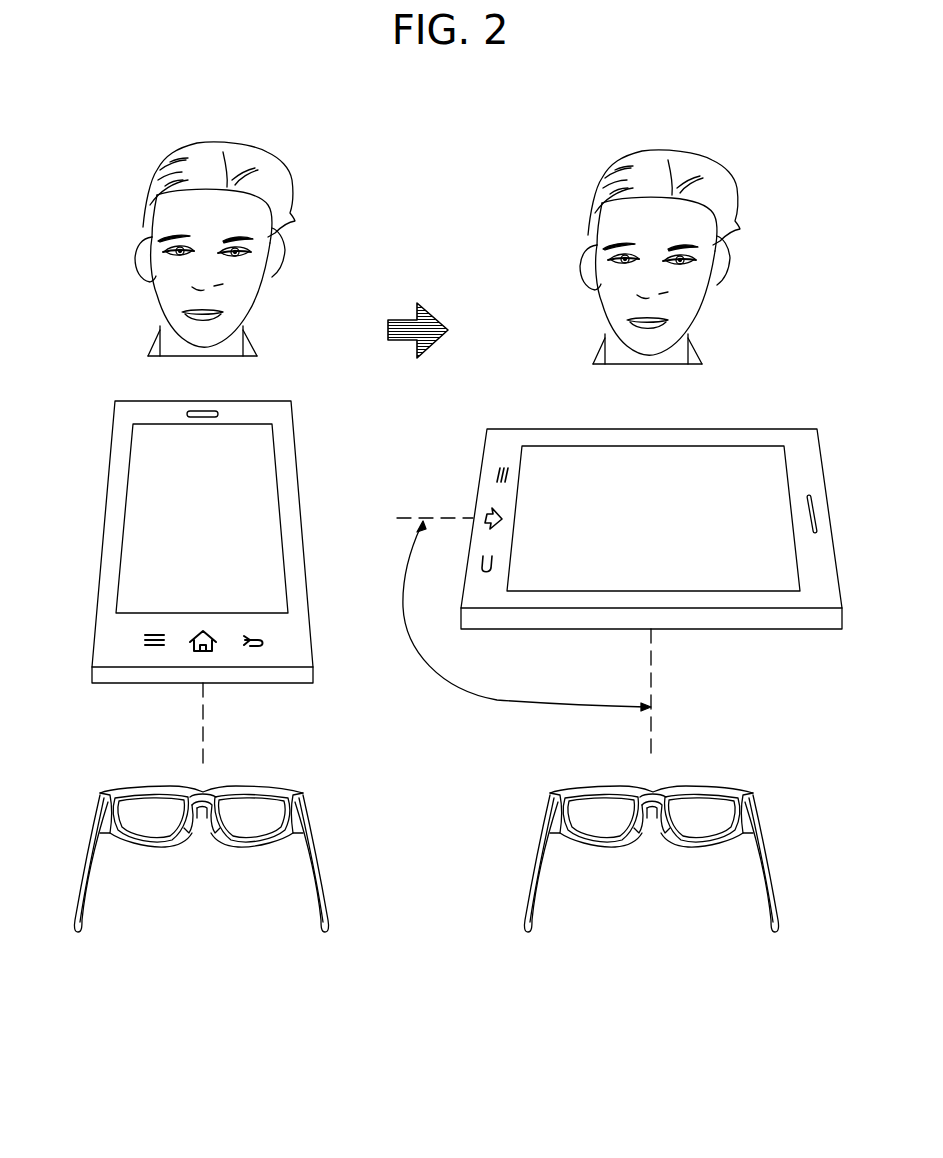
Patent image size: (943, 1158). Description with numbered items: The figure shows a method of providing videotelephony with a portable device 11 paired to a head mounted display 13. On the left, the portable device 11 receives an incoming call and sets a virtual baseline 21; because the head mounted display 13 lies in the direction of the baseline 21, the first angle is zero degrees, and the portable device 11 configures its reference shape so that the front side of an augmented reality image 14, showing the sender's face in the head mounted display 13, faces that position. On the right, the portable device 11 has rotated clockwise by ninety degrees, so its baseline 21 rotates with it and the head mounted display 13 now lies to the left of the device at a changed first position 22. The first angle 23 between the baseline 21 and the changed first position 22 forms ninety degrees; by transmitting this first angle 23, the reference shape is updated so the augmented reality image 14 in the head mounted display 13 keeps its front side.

The portable device 11 is at (275, 671).
The head mounted display 13 is at (80, 923).
The augmented reality image 14 is at (238, 151).
The baseline 21 is at (203, 735).
The changed first position 22 is at (651, 732).
The first angle 23 is at (496, 699).